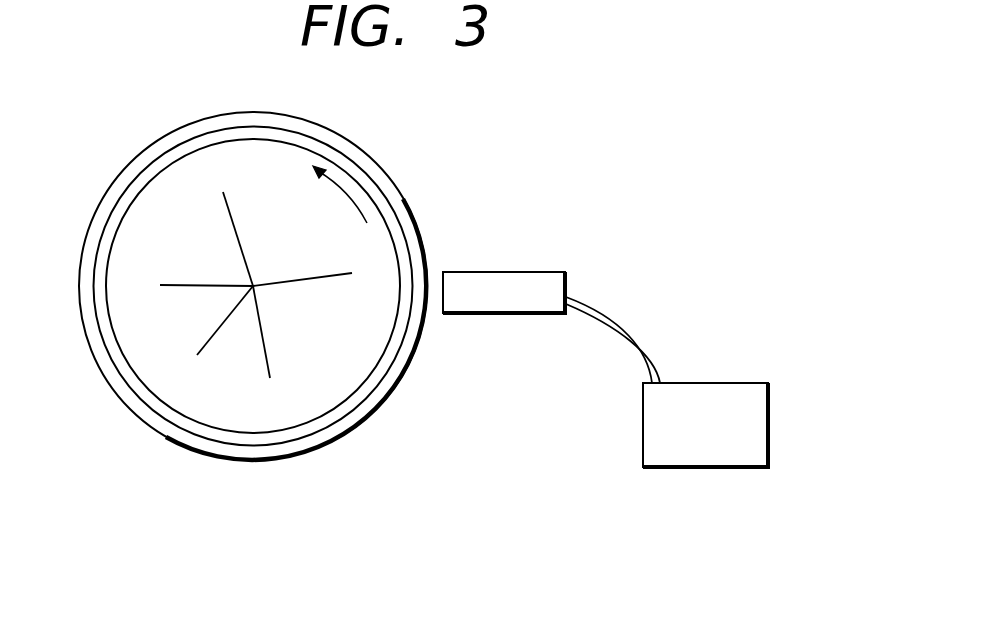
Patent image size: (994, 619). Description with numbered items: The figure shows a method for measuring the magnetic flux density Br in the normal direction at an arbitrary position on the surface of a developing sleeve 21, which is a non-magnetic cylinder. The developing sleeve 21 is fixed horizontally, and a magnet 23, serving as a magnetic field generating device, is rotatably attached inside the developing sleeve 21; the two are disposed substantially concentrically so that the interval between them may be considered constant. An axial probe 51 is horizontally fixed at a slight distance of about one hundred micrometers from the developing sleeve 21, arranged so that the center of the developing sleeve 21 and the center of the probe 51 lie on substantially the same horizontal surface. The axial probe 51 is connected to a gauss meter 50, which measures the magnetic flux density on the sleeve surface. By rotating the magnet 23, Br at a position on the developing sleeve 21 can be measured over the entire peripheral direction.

The developing sleeve 21 is at (375, 158).
The magnet 23 is at (329, 351).
The axial probe 51 is at (503, 280).
The gauss meter 50 is at (760, 423).